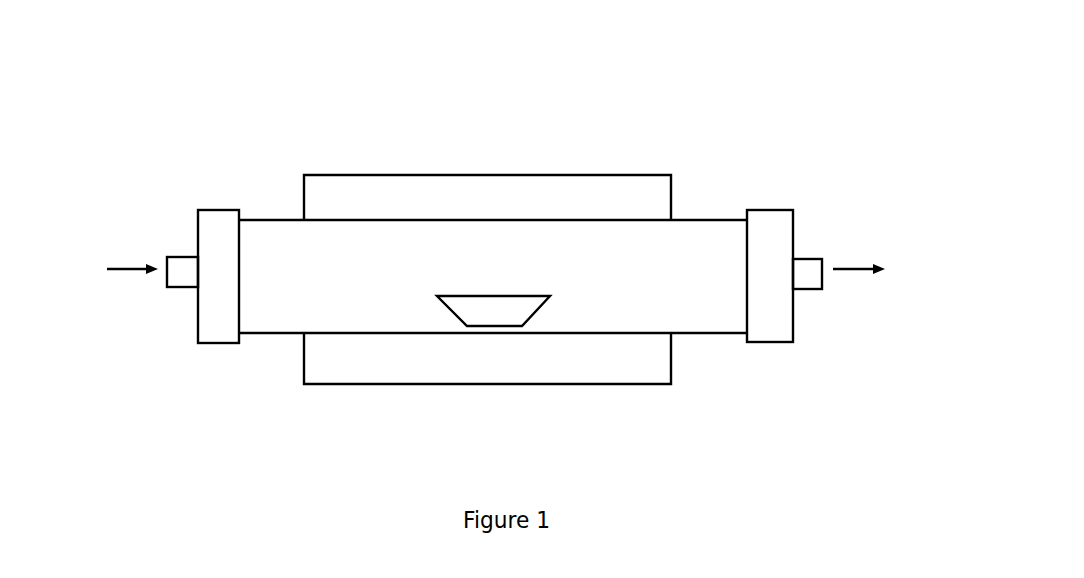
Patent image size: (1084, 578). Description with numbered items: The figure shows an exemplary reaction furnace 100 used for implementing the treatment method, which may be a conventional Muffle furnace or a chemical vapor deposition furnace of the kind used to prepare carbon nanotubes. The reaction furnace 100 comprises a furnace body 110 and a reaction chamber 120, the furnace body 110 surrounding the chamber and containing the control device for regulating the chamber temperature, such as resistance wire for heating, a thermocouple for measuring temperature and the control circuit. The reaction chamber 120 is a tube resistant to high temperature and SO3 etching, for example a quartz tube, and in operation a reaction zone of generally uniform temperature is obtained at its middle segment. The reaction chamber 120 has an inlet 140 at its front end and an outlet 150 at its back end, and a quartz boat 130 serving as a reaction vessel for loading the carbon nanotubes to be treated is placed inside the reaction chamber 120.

The reaction furnace 100 is at (924, 53).
The furnace body 110 is at (605, 192).
The reaction chamber 120 is at (475, 232).
The quartz boat 130 is at (500, 308).
The inlet 140 is at (187, 270).
The outlet 150 is at (807, 270).